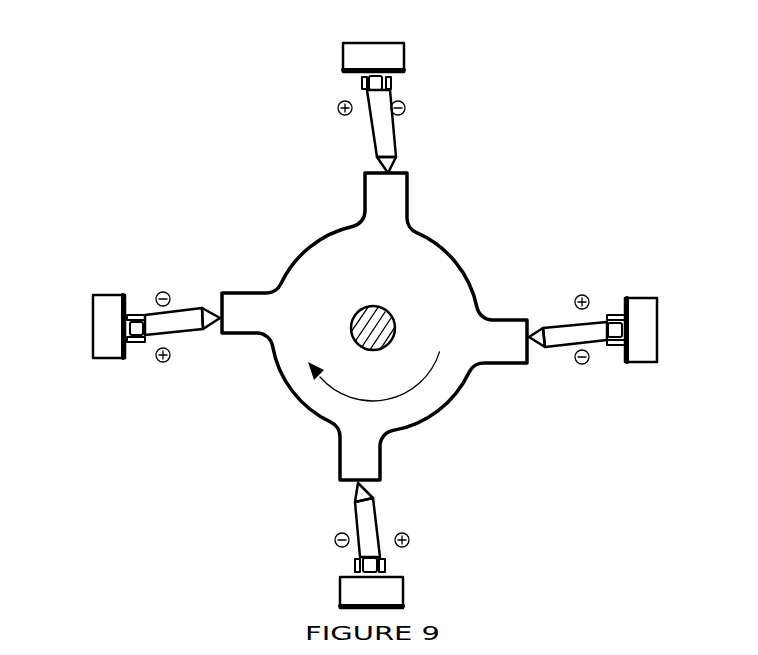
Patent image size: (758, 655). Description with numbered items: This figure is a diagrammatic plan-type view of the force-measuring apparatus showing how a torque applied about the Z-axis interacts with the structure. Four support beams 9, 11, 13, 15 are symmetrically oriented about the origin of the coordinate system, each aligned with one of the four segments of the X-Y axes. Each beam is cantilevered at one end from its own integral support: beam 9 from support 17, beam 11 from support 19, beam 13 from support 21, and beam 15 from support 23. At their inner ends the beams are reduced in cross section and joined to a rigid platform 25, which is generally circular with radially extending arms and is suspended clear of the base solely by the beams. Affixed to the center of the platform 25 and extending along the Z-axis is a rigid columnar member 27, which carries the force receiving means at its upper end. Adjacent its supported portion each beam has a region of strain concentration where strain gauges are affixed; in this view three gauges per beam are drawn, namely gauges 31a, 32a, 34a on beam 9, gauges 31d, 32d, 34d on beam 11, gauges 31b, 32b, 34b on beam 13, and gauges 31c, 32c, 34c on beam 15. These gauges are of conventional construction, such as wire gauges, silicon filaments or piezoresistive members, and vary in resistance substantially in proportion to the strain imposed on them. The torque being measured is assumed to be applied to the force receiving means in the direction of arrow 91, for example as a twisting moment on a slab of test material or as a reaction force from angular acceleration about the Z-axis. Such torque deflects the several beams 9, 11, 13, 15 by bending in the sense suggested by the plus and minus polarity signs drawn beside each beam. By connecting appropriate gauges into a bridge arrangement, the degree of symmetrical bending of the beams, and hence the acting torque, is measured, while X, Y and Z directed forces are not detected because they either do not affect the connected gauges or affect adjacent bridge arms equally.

The support beam 9 is at (182, 339).
The support beam 11 is at (400, 131).
The support beam 13 is at (568, 308).
The support beam 15 is at (395, 518).
The integral support 17 is at (81, 326).
The integral support 19 is at (406, 45).
The integral support 21 is at (669, 329).
The integral support 23 is at (398, 597).
The rigid platform 25 is at (374, 326).
The rigid columnar member 27 is at (387, 334).
The strain gauge 31a is at (89, 313).
The strain gauge 31b is at (667, 338).
The strain gauge 31c is at (342, 534).
The strain gauge 31d is at (381, 45).
The strain gauge 32a is at (137, 368).
The strain gauge 32b is at (619, 286).
The strain gauge 32c is at (422, 568).
The strain gauge 32d is at (320, 91).
The strain gauge 34a is at (146, 284).
The strain gauge 34b is at (606, 377).
The strain gauge 34c is at (302, 568).
The strain gauge 34d is at (431, 91).
The arrow 91 is at (374, 353).